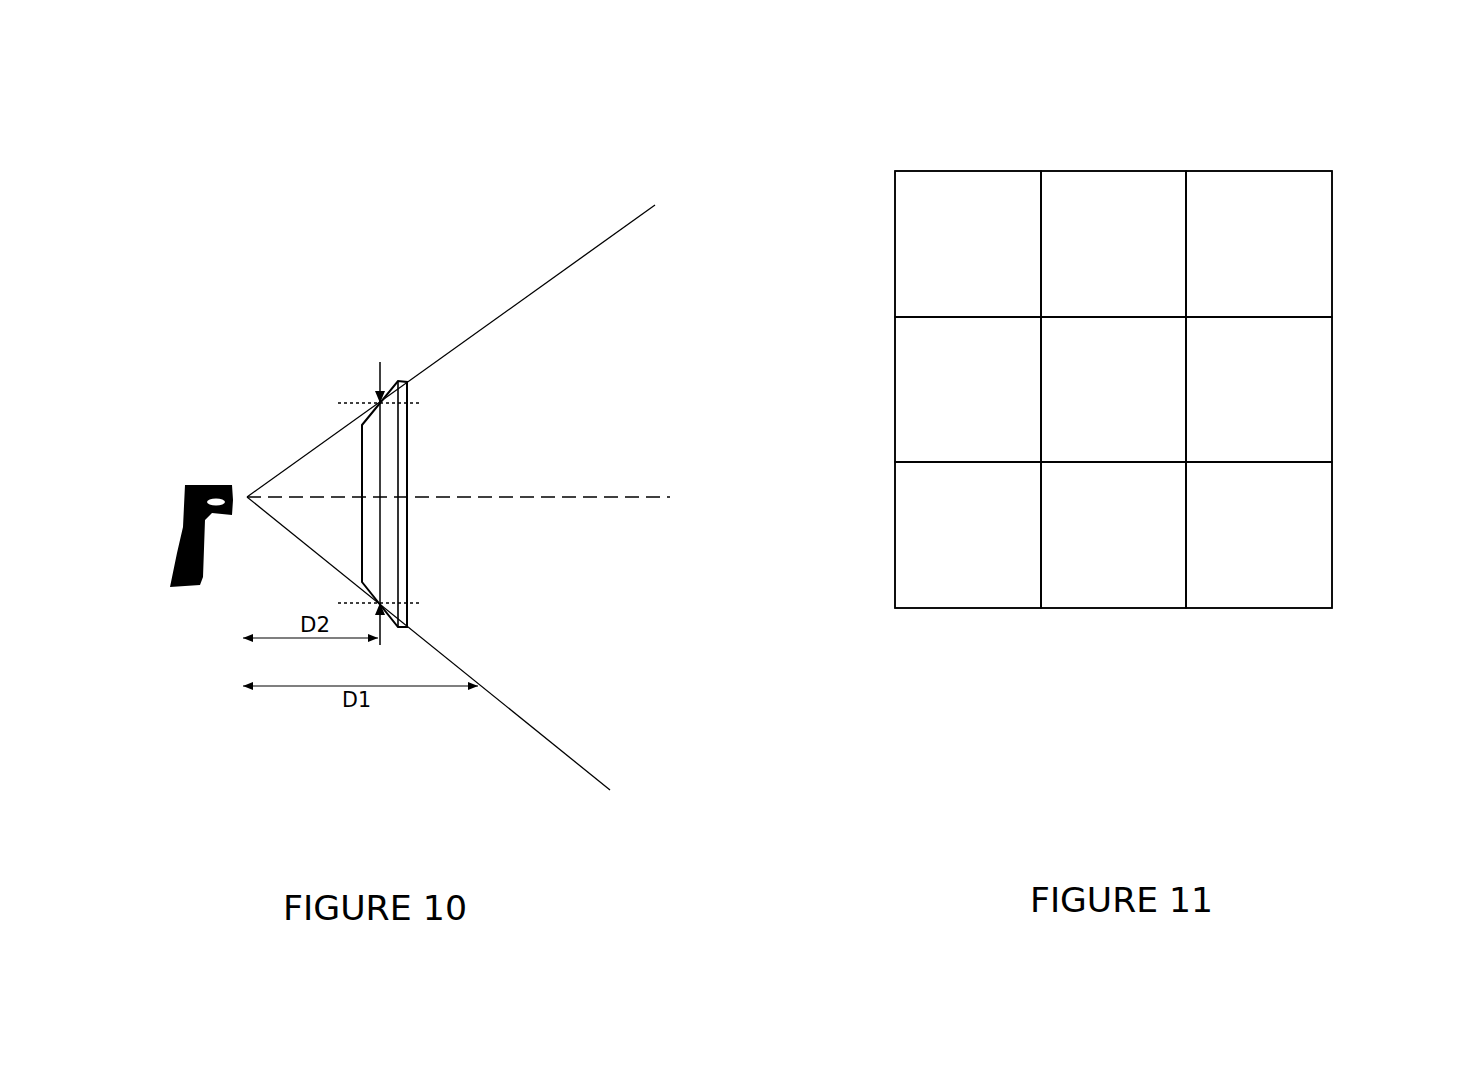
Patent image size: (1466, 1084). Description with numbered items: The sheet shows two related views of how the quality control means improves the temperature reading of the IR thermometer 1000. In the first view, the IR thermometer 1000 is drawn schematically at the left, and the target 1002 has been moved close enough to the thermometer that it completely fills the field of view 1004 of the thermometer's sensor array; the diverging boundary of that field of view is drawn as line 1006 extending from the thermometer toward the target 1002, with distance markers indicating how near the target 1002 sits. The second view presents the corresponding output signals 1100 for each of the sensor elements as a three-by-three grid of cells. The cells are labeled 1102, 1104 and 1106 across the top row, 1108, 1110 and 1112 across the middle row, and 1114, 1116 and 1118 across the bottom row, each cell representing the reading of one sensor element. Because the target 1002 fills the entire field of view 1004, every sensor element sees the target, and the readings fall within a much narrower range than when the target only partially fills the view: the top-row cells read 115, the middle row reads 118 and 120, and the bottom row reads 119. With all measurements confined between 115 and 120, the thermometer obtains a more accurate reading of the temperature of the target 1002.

In FIG. 10, the IR thermometer 1000 is at (213, 470).
In FIG. 10, the target 1002 is at (393, 467).
In FIG. 10, the field of view 1004 is at (380, 362).
In FIG. 10, the field of view boundary 1006 is at (485, 325).
In FIG. 11, the output signals 1100 is at (995, 123).
In FIG. 11, the top-left region 1102 is at (913, 298).
In FIG. 11, the top-center region 1104 is at (1122, 207).
In FIG. 11, the top-right region 1106 is at (1295, 244).
In FIG. 11, the middle-left region 1108 is at (913, 427).
In FIG. 11, the center region 1110 is at (1150, 425).
In FIG. 11, the middle-right region 1112 is at (1295, 390).
In FIG. 11, the bottom-left region 1114 is at (932, 562).
In FIG. 11, the bottom-center region 1116 is at (1077, 562).
In FIG. 11, the bottom-right region 1118 is at (1295, 536).
In FIG. 11, the lower sensor element measurement value 115 is at (1114, 254).
In FIG. 11, the region brightness value 118 is at (1114, 399).
In FIG. 11, the region brightness value 119 is at (1114, 535).
In FIG. 11, the upper sensor element measurement value 120 is at (1113, 392).